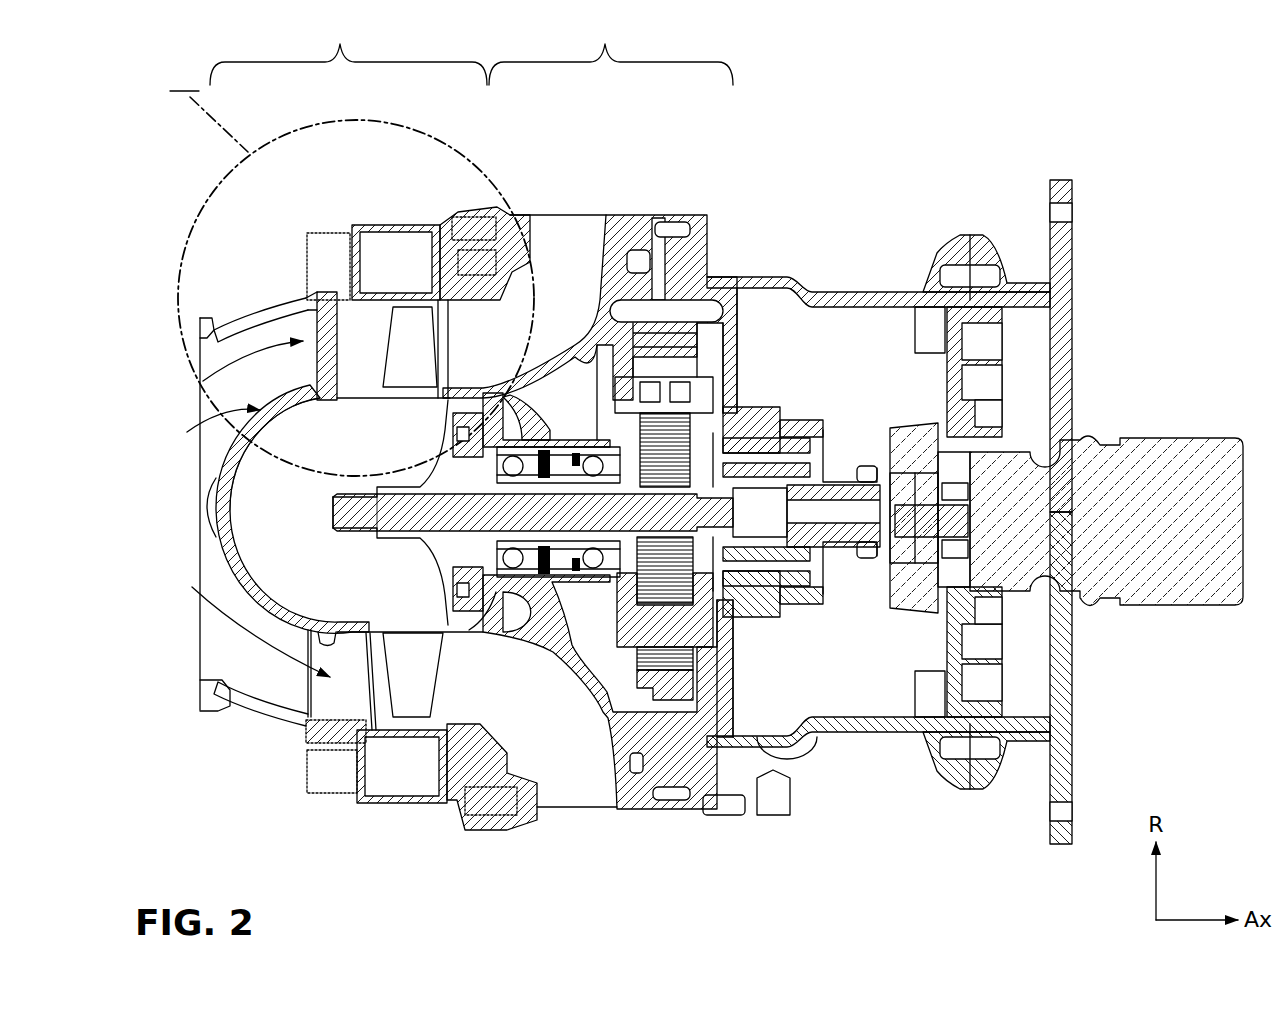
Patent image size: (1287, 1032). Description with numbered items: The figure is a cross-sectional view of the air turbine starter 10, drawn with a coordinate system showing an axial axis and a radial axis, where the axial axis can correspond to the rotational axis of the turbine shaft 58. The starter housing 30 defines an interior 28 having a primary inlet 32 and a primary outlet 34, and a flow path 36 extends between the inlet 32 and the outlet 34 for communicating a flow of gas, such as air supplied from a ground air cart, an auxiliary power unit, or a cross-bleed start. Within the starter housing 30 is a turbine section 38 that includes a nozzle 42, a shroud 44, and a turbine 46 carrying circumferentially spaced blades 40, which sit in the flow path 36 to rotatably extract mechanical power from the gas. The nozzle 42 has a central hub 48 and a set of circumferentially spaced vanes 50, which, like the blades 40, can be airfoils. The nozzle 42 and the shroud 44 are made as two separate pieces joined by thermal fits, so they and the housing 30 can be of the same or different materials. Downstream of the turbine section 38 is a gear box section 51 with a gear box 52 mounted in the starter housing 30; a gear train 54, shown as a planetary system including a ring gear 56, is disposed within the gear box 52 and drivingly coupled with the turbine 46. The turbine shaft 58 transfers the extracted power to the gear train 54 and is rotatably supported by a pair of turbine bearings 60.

The air turbine starter 10 is at (1164, 61).
The interior 28 is at (294, 389).
The starter housing 30 is at (403, 225).
The primary inlet 32 is at (186, 487).
The primary outlet 34 is at (597, 213).
The flow path 36 is at (258, 358).
The turbine section 38 is at (348, 49).
The blades 40 is at (442, 378).
The nozzle 42 is at (253, 395).
The shroud 44 is at (322, 290).
The turbine 46 is at (450, 392).
The central hub 48 is at (222, 540).
The vanes 50 is at (318, 292).
The gear box section 51 is at (611, 49).
The gear box 52 is at (730, 360).
The gear train 54 is at (710, 347).
The ring gear 56 is at (667, 657).
The turbine shaft 58 is at (337, 527).
The turbine bearings 60 is at (590, 555).